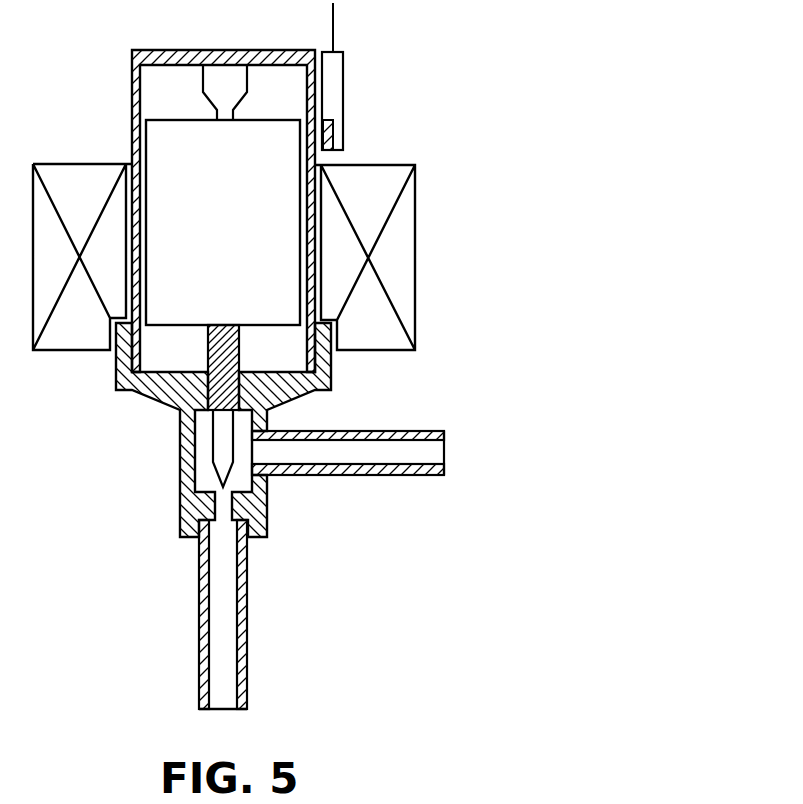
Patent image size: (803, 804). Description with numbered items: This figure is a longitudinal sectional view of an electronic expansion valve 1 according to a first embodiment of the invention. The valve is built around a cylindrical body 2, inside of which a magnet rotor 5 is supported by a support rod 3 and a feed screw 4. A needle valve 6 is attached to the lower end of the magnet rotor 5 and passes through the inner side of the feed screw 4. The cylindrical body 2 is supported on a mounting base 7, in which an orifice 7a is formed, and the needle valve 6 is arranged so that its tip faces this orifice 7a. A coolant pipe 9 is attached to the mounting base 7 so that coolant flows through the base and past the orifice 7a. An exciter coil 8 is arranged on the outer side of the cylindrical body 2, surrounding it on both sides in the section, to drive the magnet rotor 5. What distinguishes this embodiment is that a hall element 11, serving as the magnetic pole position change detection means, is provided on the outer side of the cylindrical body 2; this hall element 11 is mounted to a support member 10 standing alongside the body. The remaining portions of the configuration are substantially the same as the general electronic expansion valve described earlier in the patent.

The electronic expansion valve 1 is at (406, 116).
The cylindrical body 2 is at (257, 57).
The support rod 3 is at (215, 78).
The feed screw 4 is at (240, 362).
The magnet rotor 5 is at (160, 146).
The needle valve 6 is at (210, 472).
The mounting base 7 is at (153, 398).
The orifice 7a is at (217, 528).
The exciter coil 8 is at (402, 272).
The coolant pipe 9 is at (348, 474).
The support member 10 is at (343, 76).
The hall element 11 is at (333, 130).